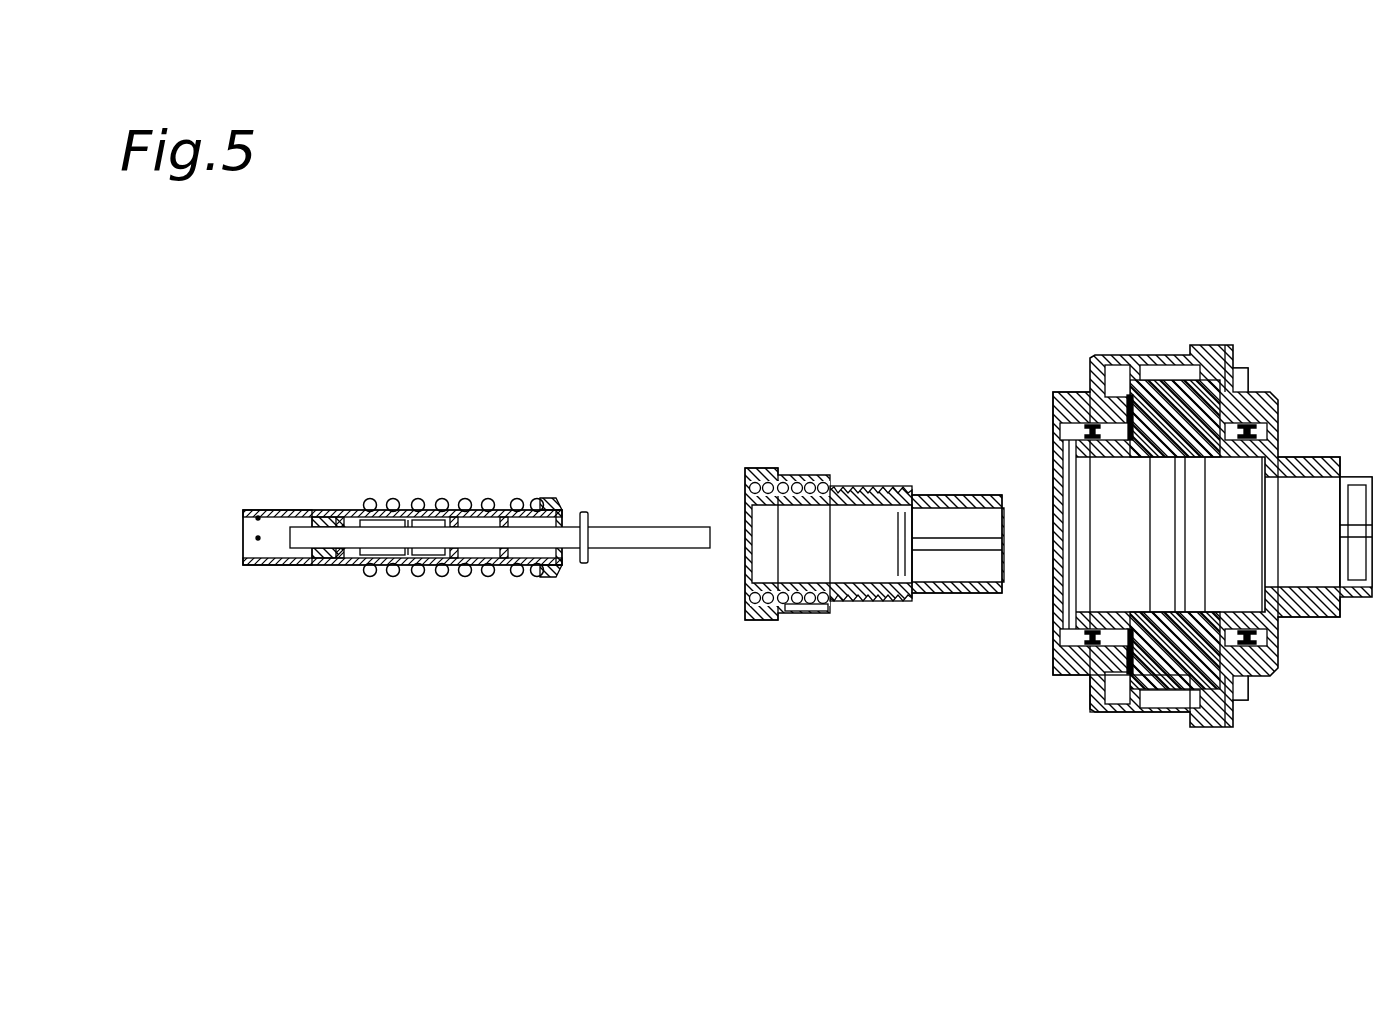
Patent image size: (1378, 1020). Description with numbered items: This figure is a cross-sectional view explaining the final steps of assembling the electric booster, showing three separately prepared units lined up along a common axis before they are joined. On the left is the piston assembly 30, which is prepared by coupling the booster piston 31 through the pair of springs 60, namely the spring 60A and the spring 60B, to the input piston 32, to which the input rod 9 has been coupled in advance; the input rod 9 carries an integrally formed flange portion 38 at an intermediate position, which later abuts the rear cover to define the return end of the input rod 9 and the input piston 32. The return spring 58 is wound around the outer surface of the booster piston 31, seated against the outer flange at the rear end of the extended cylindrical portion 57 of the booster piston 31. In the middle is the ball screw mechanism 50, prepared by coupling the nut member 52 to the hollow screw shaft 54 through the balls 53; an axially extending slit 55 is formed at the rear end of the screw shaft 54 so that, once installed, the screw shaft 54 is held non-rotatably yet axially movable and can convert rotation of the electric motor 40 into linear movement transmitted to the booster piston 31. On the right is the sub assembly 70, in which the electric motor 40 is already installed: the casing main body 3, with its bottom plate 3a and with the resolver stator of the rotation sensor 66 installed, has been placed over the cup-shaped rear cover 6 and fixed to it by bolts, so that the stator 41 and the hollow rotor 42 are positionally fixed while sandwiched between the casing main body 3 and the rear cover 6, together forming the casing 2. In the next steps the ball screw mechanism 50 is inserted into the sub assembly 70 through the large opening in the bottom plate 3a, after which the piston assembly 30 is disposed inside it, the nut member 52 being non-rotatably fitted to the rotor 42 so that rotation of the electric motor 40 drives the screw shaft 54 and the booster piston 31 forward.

The casing 2 is at (1103, 354).
The casing main body 3 is at (1058, 395).
The bottom plate 3a is at (1058, 452).
The rear cover 6 is at (1280, 395).
The input rod 9 is at (640, 528).
The piston assembly 30 is at (292, 504).
The booster piston 31 is at (282, 566).
The input piston 32 is at (382, 560).
The flange portion 38 is at (587, 576).
The electric motor 40 is at (1155, 378).
The stator 41 is at (1148, 660).
The rotor 42 is at (1205, 705).
The ball screw mechanism 50 is at (828, 478).
The nut member 52 is at (772, 468).
The balls 53 is at (797, 618).
The screw shaft 54 is at (895, 488).
The slit 55 is at (965, 548).
The extended cylindrical portion 57 is at (550, 500).
The return spring 58 is at (488, 580).
The pair of springs 60 is at (505, 412).
The spring 60A is at (380, 520).
The spring 60B is at (457, 515).
The rotation sensor 66 is at (1098, 672).
The sub assembly 70 is at (1237, 345).